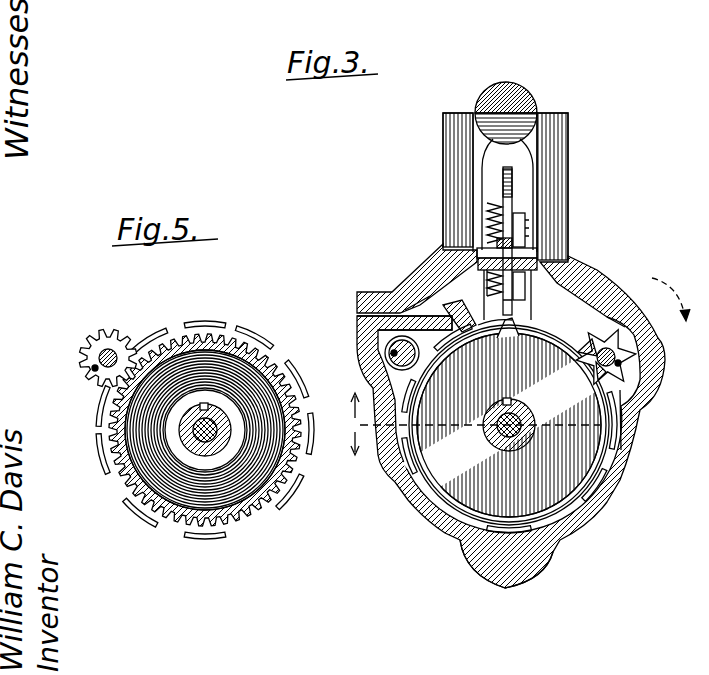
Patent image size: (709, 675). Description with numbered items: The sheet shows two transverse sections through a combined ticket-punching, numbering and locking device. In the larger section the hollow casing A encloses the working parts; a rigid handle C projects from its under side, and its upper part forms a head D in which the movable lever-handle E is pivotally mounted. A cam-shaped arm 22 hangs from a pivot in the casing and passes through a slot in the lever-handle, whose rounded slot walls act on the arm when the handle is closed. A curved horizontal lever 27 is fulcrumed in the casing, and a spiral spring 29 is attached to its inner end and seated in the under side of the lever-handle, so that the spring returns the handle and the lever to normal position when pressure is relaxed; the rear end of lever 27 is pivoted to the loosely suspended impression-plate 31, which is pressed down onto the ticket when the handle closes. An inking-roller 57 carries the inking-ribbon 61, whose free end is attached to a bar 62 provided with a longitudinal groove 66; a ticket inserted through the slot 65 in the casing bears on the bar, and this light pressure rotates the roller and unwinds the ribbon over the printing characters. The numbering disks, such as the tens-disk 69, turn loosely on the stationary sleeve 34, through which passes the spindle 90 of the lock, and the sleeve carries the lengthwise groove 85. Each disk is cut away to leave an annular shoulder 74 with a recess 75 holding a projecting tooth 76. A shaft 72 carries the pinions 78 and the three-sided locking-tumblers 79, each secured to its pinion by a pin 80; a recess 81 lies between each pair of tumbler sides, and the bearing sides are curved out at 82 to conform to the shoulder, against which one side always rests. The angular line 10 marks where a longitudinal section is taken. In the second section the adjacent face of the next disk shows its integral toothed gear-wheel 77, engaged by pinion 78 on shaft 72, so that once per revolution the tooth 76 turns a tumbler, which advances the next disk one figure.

In FIG. 3, the lever-handle E is at (513, 90).
In FIG. 3, the head D is at (570, 119).
In FIG. 3, the cam-shaped arm 22 is at (511, 180).
In FIG. 3, the spiral spring 29 is at (490, 213).
In FIG. 3, the curved horizontal lever 27 is at (527, 217).
In FIG. 3, the impression-plate 31 is at (539, 264).
In FIG. 3, the bar 62 is at (456, 311).
In FIG. 3, the slot 65 is at (350, 312).
In FIG. 3, the groove 66 is at (440, 303).
In FIG. 3, the inking-roller 57 is at (385, 351).
In FIG. 3, the inking-ribbon 61 is at (390, 358).
In FIG. 3, the hollow casing A is at (623, 480).
In FIG. 3, the rigid handle C is at (465, 563).
In FIG. 3, the tens-disk 69 is at (437, 478).
In FIG. 3, the annular shoulder 74 is at (590, 477).
In FIG. 3, the recess 75 is at (505, 342).
In FIG. 3, the tooth 76 is at (514, 330).
In FIG. 3, the stationary sleeve 34 is at (526, 441).
In FIG. 5, the stationary sleeve 34 is at (200, 446).
In FIG. 3, the spindle 90 is at (503, 438).
In FIG. 5, the spindle 90 is at (214, 435).
In FIG. 3, the groove 85 is at (504, 406).
In FIG. 5, the groove 85 is at (209, 405).
In FIG. 3, the shaft 72 is at (612, 333).
In FIG. 5, the shaft 72 is at (112, 346).
In FIG. 5, the pinion 78 is at (95, 345).
In FIG. 3, the pin 80 is at (622, 363).
In FIG. 5, the pin 80 is at (92, 369).
In FIG. 3, the locking-tumbler 79 is at (620, 325).
In FIG. 3, the recess 81 is at (624, 338).
In FIG. 3, the curved bearing side 82 is at (631, 375).
In FIG. 3, the angular section line 10 is at (358, 425).
In FIG. 5, the integral toothed gear-wheel 77 is at (282, 476).